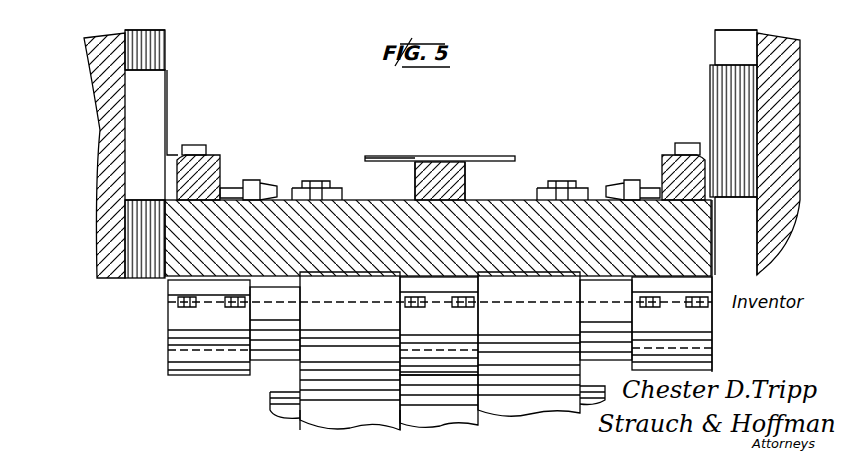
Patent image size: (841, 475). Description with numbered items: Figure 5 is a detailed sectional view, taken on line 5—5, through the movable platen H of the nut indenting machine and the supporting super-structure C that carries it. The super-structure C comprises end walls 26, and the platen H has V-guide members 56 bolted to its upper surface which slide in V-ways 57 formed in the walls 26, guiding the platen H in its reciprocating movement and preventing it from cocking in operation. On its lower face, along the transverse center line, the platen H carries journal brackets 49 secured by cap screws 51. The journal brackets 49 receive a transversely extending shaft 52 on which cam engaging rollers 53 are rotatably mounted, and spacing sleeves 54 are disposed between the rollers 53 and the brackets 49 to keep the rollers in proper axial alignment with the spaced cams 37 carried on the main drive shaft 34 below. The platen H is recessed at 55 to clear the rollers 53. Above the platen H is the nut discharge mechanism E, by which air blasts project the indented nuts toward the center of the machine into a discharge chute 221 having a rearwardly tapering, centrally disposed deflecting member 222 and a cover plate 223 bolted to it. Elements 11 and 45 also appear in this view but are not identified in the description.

The movable platen H is at (165, 268).
The end walls 26 is at (97, 72).
The V-ways 57 is at (155, 52).
The V-guide members 56 is at (152, 100).
The supporting super-structure C is at (176, 35).
The nut discharge mechanism E is at (254, 171).
The contact blocks 11 is at (310, 185).
The discharge chute 221 is at (495, 152).
The deflecting member 222 is at (460, 181).
The cover plate 223 is at (400, 146).
The journal brackets 49 is at (180, 335).
The cap screws 51 is at (238, 307).
The cam engaging rollers 53 is at (300, 325).
The recess 55 is at (350, 274).
The spacing sleeves 54 is at (255, 330).
The transversely extending shaft 52 is at (470, 340).
The main drive shaft 34 is at (285, 405).
The cams 37 is at (335, 422).
The lever 45 is at (302, 10).
The frame 5 is at (445, 5).